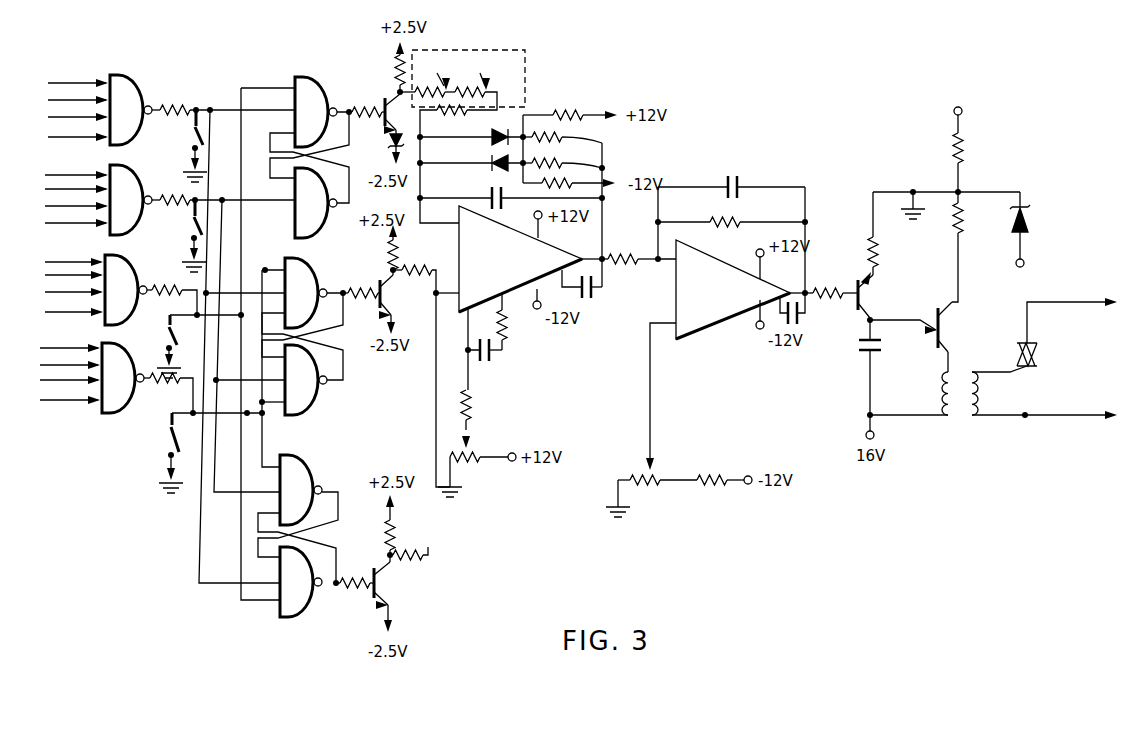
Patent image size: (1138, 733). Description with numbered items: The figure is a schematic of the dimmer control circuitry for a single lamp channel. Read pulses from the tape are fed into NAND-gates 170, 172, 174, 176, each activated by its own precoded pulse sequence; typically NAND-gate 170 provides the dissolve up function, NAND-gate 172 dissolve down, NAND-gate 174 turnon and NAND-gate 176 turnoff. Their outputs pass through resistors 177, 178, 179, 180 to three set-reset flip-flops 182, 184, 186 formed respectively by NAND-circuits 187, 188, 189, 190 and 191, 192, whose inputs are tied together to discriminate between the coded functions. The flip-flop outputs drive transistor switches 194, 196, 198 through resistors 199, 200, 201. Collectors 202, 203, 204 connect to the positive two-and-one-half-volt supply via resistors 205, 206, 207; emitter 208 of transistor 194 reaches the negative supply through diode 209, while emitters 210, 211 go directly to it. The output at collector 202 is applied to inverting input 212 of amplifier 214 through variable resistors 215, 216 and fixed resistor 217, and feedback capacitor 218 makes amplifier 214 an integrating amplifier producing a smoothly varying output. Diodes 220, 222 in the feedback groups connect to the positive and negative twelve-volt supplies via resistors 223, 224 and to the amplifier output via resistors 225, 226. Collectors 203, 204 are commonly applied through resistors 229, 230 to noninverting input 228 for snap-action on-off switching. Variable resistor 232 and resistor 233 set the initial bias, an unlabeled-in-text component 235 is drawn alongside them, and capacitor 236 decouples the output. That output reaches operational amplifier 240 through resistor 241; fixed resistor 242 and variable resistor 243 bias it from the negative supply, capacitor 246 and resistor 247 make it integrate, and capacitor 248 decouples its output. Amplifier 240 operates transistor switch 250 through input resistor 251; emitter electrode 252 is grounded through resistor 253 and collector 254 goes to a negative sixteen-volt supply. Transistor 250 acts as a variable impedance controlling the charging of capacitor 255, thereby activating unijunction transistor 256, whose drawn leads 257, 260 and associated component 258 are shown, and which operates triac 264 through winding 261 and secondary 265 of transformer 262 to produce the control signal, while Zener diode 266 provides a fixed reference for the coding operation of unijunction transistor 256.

The NAND-gate 170 is at (142, 119).
The NAND-gate 172 is at (142, 209).
The NAND-gate 174 is at (137, 299).
The NAND-gate 176 is at (134, 387).
The resistor 177 is at (166, 105).
The resistor 178 is at (161, 198).
The resistor 179 is at (158, 287).
The resistor 180 is at (160, 388).
The RS flip-flop 182 is at (310, 156).
The RS flip-flop 184 is at (310, 337).
The RS flip-flop 186 is at (308, 535).
The NAND-circuit 187 is at (327, 121).
The NAND-circuit 188 is at (327, 212).
The NAND-circuit 189 is at (317, 302).
The NAND-circuit 190 is at (317, 389).
The NAND-circuit 191 is at (312, 501).
The NAND-circuit 192 is at (312, 592).
The transistor switch 194 is at (414, 121).
The transistor switch 196 is at (418, 303).
The transistor switch 198 is at (429, 606).
The resistor 199 is at (378, 109).
The resistor 200 is at (372, 290).
The resistor 201 is at (344, 578).
The collector electrode 202 is at (399, 80).
The collector electrode 203 is at (390, 260).
The collector electrode 204 is at (404, 563).
The resistor 205 is at (396, 54).
The resistor 206 is at (400, 243).
The resistor 207 is at (403, 532).
The emitter 208 is at (390, 146).
The diode 209 is at (392, 152).
The emitter 210 is at (397, 318).
The emitter 211 is at (386, 620).
The inverting input 212 is at (488, 207).
The amplifier 214 is at (513, 276).
The variable resistor 215 is at (425, 77).
The variable resistor 216 is at (478, 80).
The fixed resistor 217 is at (468, 112).
The capacitor 218 is at (457, 222).
The diode 220 is at (488, 142).
The diode 222 is at (488, 170).
The resistor 223 is at (559, 109).
The resistor 224 is at (604, 198).
The resistor 225 is at (578, 140).
The resistor 226 is at (580, 159).
The noninverting input 228 is at (445, 297).
The resistor 229 is at (408, 265).
The resistor 230 is at (407, 552).
The variable resistor 232 is at (477, 446).
The resistor 233 is at (473, 408).
The capacitor 235 is at (490, 360).
The capacitor 236 is at (596, 291).
The operational amplifier 240 is at (722, 306).
The resistor 241 is at (642, 253).
The fixed resistor 242 is at (712, 476).
The variable resistor 243 is at (690, 462).
The capacitor 246 is at (744, 186).
The resistor 247 is at (741, 216).
The capacitor 248 is at (800, 317).
The transistor switch 250 is at (903, 296).
The input resistor 251 is at (845, 287).
The emitter electrode 252 is at (878, 268).
The resistor 253 is at (864, 248).
The collector 254 is at (872, 316).
The capacitor 255 is at (888, 367).
The unijunction transistor 256 is at (982, 337).
The collector lead 257 is at (947, 318).
The resistor 258 is at (972, 219).
The emitter lead 260 is at (950, 348).
The primary winding 261 is at (942, 398).
The transformer 262 is at (948, 405).
The triac 264 is at (1043, 354).
The secondary 265 is at (999, 390).
The Zener diode 266 is at (1038, 229).